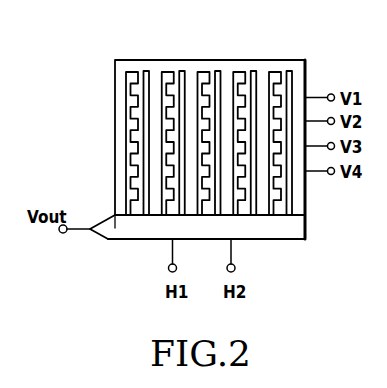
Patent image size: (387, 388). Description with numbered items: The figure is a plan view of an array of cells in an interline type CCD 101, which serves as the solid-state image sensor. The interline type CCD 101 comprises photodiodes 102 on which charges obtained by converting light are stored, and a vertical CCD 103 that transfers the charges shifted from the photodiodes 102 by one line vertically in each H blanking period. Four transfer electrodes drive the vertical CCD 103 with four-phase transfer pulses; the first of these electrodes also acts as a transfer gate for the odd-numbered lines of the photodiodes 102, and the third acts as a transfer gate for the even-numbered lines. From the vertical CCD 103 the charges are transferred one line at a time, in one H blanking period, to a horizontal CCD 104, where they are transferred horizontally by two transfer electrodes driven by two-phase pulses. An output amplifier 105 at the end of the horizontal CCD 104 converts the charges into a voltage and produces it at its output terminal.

The interline type CCD 101 is at (196, 60).
The photodiodes 102 is at (130, 72).
The vertical CCD 103 is at (288, 74).
The horizontal CCD 104 is at (128, 232).
The output amplifier 105 is at (100, 222).